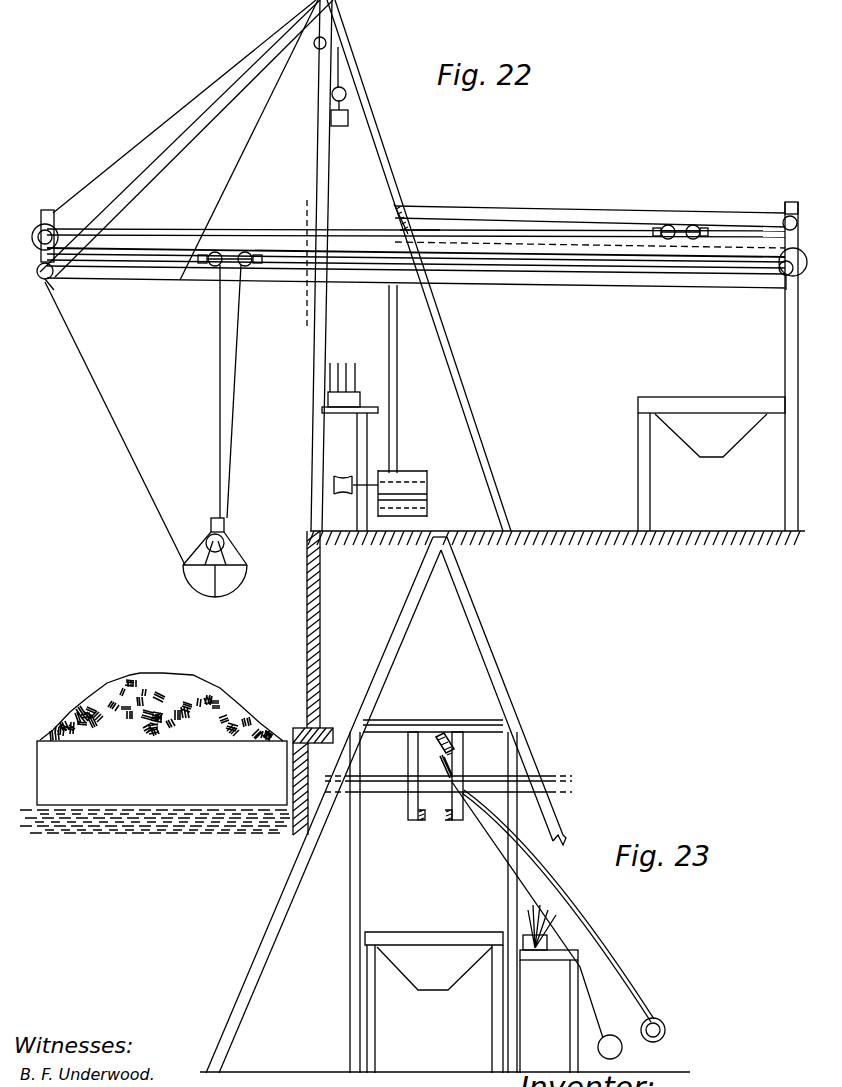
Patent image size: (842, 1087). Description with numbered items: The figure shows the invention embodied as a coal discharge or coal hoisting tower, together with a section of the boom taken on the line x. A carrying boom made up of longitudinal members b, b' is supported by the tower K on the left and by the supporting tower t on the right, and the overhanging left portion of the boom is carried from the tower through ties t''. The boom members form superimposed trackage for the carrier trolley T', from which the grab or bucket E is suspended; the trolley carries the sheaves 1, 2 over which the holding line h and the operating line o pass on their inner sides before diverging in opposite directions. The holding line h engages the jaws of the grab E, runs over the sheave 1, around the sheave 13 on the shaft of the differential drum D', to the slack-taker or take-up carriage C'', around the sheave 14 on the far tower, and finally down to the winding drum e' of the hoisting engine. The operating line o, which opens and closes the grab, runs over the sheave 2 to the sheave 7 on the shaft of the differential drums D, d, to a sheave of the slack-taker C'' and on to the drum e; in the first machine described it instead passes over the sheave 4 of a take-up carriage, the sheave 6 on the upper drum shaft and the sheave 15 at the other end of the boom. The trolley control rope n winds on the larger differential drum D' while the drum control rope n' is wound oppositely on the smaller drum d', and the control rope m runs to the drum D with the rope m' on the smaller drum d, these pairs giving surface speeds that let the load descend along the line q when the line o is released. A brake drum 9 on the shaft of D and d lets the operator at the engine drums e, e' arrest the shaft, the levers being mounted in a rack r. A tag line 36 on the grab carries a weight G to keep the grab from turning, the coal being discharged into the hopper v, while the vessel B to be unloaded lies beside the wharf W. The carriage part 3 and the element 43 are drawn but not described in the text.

In FIG. 22, the tower K is at (330, 195).
In FIG. 23, the tower K is at (345, 905).
In FIG. 22, the ties t'' is at (275, 265).
In FIG. 22, the weight G is at (339, 96).
In FIG. 22, the section line x is at (300, 258).
In FIG. 22, the drum control rope n' is at (416, 210).
In FIG. 22, the sheave 14 is at (420, 228).
In FIG. 23, the sheave 14 is at (435, 766).
In FIG. 22, the descent line q is at (590, 209).
In FIG. 22, the sheave 15 is at (392, 205).
In FIG. 23, the sheave 15 is at (447, 743).
In FIG. 22, the drum control rope m' is at (590, 240).
In FIG. 22, the longitudinal member b' is at (416, 279).
In FIG. 23, the longitudinal member b' is at (419, 789).
In FIG. 22, the control rope n is at (416, 279).
In FIG. 22, the longitudinal member b is at (416, 285).
In FIG. 23, the longitudinal member b is at (448, 816).
In FIG. 22, the carrier trolley control rope m is at (416, 288).
In FIG. 22, the smaller differential drum d' is at (40, 226).
In FIG. 22, the sheave 13 is at (56, 228).
In FIG. 22, the brake drum 9 is at (60, 236).
In FIG. 22, the larger differential drum D' is at (39, 283).
In FIG. 22, the rope attachment 43 is at (52, 282).
In FIG. 22, the tag line 36 is at (112, 396).
In FIG. 22, the trolley T' is at (230, 280).
In FIG. 22, the sheave 1 is at (215, 252).
In FIG. 22, the sheave 2 is at (245, 252).
In FIG. 22, the slack-taker C'' is at (680, 209).
In FIG. 22, the carriage wheel 3 is at (668, 224).
In FIG. 22, the sheave 4 is at (693, 224).
In FIG. 22, the supporting tower t is at (781, 366).
In FIG. 22, the sheave 6 is at (796, 221).
In FIG. 22, the sheave 7 is at (794, 256).
In FIG. 22, the larger differential drum D is at (769, 285).
In FIG. 22, the smaller differential drum d is at (775, 302).
In FIG. 22, the holding line h is at (219, 400).
In FIG. 23, the holding line h is at (594, 1000).
In FIG. 22, the operating line o is at (235, 400).
In FIG. 23, the operating line o is at (615, 966).
In FIG. 22, the grab or bucket E is at (215, 557).
In FIG. 22, the rack of operating levers r is at (356, 390).
In FIG. 23, the rack of operating levers r is at (546, 931).
In FIG. 22, the winding drum e is at (389, 493).
In FIG. 23, the winding drum e is at (661, 1030).
In FIG. 22, the winding drum e' is at (414, 508).
In FIG. 23, the winding drum e' is at (619, 1049).
In FIG. 22, the hopper v is at (711, 464).
In FIG. 23, the hopper v is at (434, 1002).
In FIG. 22, the wharf W is at (329, 683).
In FIG. 22, the vessel B is at (162, 739).